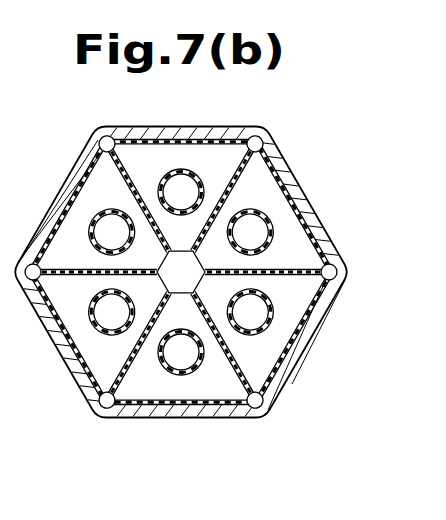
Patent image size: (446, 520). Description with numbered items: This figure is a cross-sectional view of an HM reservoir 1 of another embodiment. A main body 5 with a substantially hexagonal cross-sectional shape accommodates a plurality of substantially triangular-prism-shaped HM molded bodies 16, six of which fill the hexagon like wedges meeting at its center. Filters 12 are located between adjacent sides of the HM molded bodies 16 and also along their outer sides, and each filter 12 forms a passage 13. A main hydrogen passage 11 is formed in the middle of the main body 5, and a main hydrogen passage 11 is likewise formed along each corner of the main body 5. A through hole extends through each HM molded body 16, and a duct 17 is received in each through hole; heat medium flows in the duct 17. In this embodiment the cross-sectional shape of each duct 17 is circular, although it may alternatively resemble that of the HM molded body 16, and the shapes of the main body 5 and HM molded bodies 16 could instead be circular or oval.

The honeycomb block 1 is at (302, 138).
The main body 5 is at (306, 338).
The main hydrogen passage 11 is at (102, 143).
The filter 12 is at (206, 228).
The passage 13 is at (132, 188).
The HM molded body 16 is at (136, 150).
The duct 17 is at (190, 172).